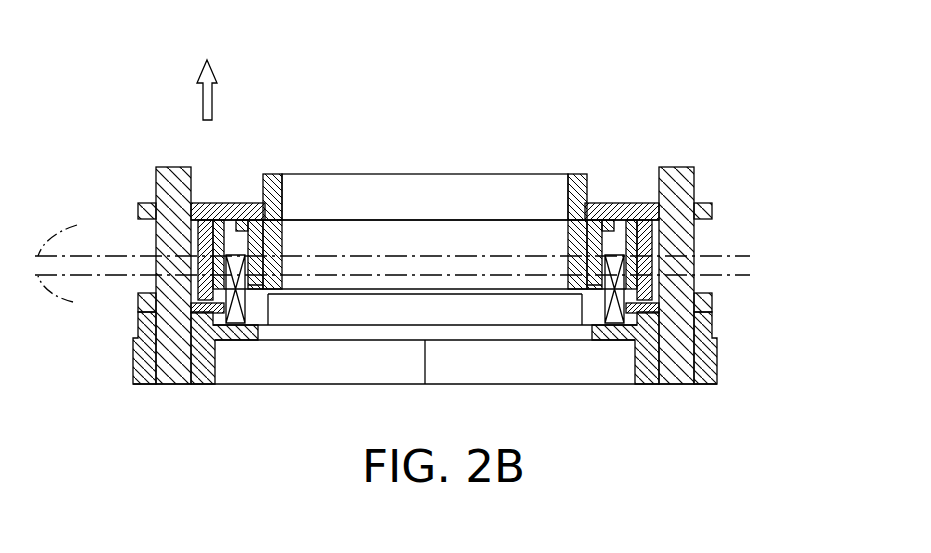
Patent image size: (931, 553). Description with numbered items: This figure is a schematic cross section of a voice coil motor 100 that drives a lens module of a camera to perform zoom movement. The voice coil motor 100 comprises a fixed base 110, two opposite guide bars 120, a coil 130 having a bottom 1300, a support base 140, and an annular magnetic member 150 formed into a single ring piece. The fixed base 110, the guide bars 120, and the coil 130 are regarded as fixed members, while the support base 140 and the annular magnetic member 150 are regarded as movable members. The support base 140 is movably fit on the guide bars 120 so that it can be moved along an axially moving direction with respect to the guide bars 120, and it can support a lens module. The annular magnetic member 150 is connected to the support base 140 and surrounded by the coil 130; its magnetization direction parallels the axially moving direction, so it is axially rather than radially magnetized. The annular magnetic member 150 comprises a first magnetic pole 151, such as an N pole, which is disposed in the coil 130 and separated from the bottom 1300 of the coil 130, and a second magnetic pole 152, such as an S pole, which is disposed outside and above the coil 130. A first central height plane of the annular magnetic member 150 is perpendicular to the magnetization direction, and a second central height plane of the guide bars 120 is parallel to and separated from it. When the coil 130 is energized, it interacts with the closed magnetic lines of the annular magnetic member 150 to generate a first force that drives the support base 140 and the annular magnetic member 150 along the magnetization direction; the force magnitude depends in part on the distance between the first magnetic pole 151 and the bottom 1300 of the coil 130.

The voice coil motor 100 is at (88, 51).
The fixed base 110 is at (137, 365).
The guide bars 120 is at (156, 182).
The coil 130 is at (214, 306).
The support base 140 is at (212, 208).
The annular magnetic member 150 is at (612, 240).
The first magnetic pole 151 is at (264, 300).
The second magnetic pole 152 is at (266, 178).
The bottom of the coil 1300 is at (259, 302).